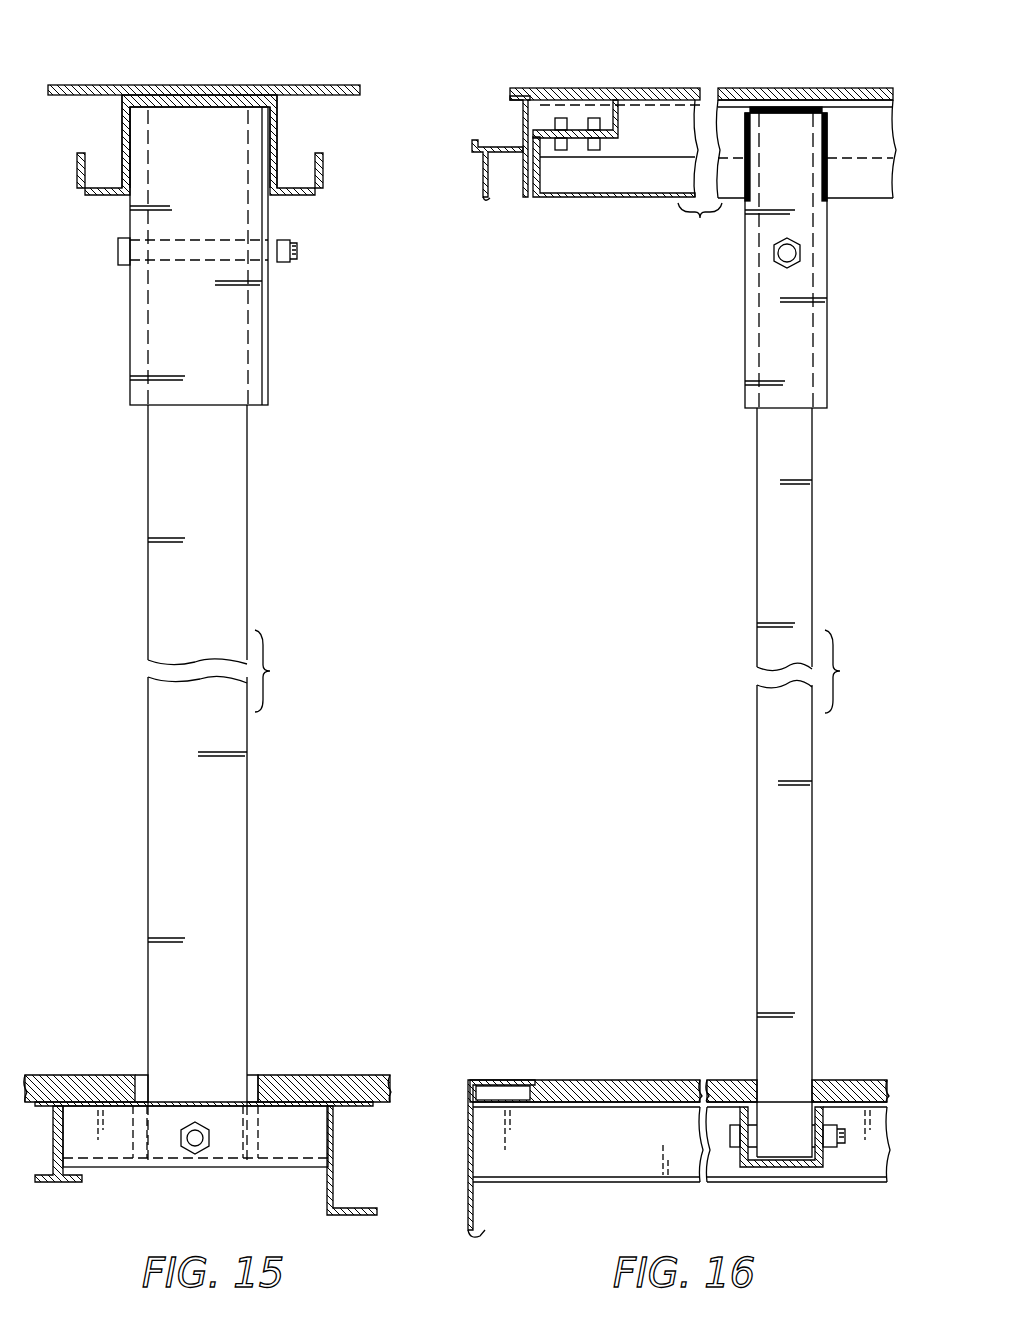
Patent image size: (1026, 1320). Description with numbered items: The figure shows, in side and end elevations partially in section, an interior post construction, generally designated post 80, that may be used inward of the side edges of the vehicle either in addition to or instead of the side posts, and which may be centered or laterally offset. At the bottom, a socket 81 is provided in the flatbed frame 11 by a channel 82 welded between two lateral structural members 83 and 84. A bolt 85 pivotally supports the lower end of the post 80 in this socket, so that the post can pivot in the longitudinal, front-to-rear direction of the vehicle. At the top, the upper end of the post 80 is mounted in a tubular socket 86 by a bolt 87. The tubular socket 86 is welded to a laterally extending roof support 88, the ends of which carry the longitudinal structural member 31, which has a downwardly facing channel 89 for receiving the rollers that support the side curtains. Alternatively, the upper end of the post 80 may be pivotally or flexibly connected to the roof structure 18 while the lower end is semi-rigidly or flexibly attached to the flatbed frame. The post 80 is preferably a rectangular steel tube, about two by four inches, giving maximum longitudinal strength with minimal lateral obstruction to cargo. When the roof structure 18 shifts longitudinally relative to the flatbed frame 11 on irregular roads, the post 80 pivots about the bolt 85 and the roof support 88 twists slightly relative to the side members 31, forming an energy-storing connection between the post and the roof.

In FIG. 16, the flatbed frame 11 is at (508, 1063).
In FIG. 16, the roof structure 18 is at (697, 70).
In FIG. 16, the longitudinal structural member 31 is at (523, 116).
In FIG. 15, the post 80 is at (250, 801).
In FIG. 16, the post 80 is at (798, 782).
In FIG. 15, the socket 81 is at (252, 1080).
In FIG. 16, the socket 81 is at (812, 1107).
In FIG. 15, the channel 82 is at (248, 1168).
In FIG. 16, the channel 82 is at (780, 1168).
In FIG. 15, the lateral structural member 83 is at (58, 1183).
In FIG. 15, the lateral structural member 84 is at (340, 1216).
In FIG. 16, the bolt 85 is at (728, 1137).
In FIG. 15, the tubular socket 86 is at (272, 356).
In FIG. 16, the tubular socket 86 is at (745, 313).
In FIG. 15, the bolt 87 is at (298, 251).
In FIG. 15, the roof support 88 is at (275, 130).
In FIG. 16, the roof support 88 is at (585, 197).
In FIG. 16, the channel 89 is at (495, 180).